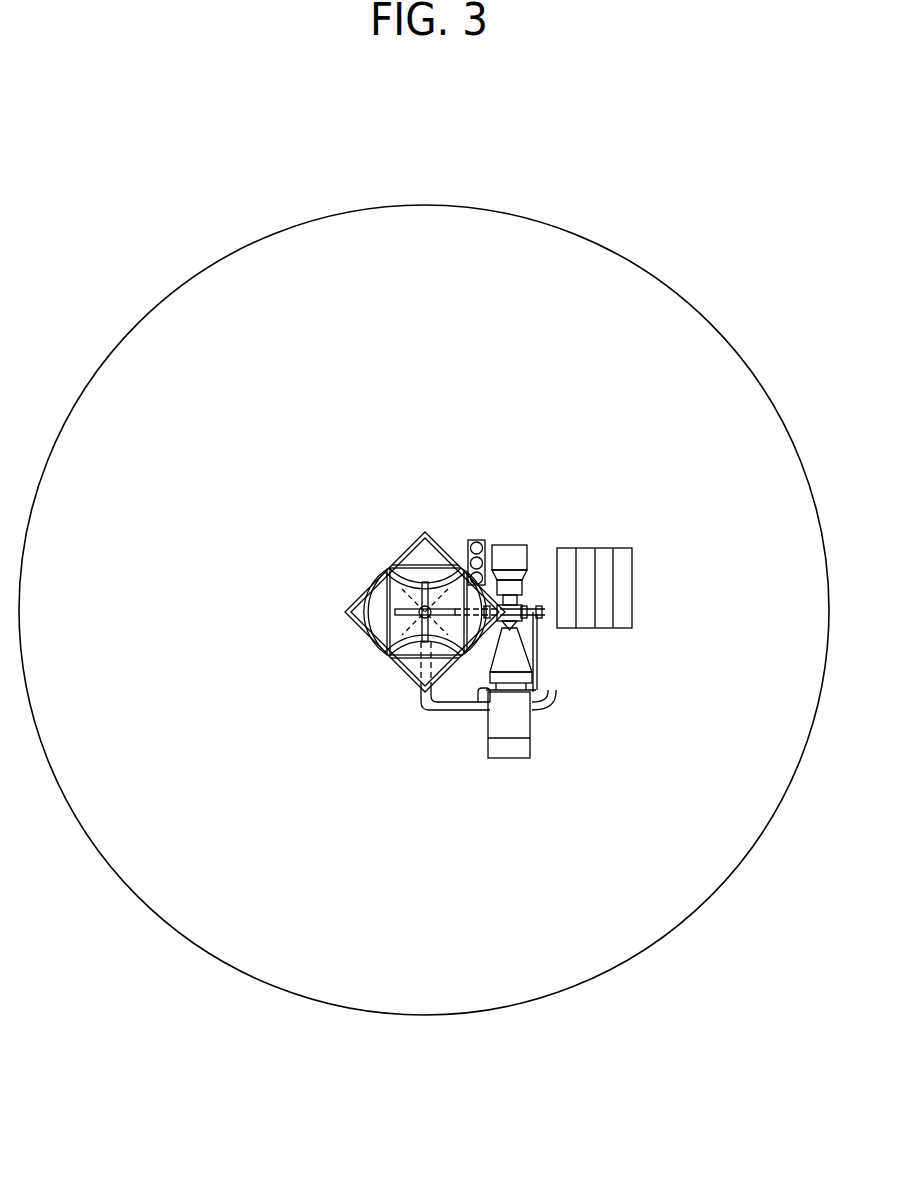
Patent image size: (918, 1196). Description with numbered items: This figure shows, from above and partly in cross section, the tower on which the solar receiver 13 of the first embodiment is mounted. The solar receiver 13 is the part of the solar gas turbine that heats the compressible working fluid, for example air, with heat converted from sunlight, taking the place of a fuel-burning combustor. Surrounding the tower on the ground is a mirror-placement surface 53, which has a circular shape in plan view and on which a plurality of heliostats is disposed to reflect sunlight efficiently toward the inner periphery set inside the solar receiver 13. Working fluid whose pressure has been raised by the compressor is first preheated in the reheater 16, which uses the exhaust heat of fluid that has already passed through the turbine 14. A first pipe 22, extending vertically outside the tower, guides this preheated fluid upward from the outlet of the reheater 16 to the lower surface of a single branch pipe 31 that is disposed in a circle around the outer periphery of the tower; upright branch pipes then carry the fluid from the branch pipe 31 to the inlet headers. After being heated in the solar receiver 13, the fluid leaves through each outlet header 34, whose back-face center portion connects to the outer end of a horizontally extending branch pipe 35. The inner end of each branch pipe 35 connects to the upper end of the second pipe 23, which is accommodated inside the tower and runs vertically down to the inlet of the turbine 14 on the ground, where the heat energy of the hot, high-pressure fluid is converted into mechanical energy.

The mirror-placement surface 53 is at (437, 240).
The solar receiver 13 is at (465, 613).
The second pipe 23 is at (406, 582).
The outlet header 34 is at (388, 596).
The branch pipe 31 is at (375, 630).
The branch pipe 35 is at (417, 677).
The first pipe 22 is at (428, 706).
The turbine 14 is at (522, 622).
The reheater 16 is at (503, 697).